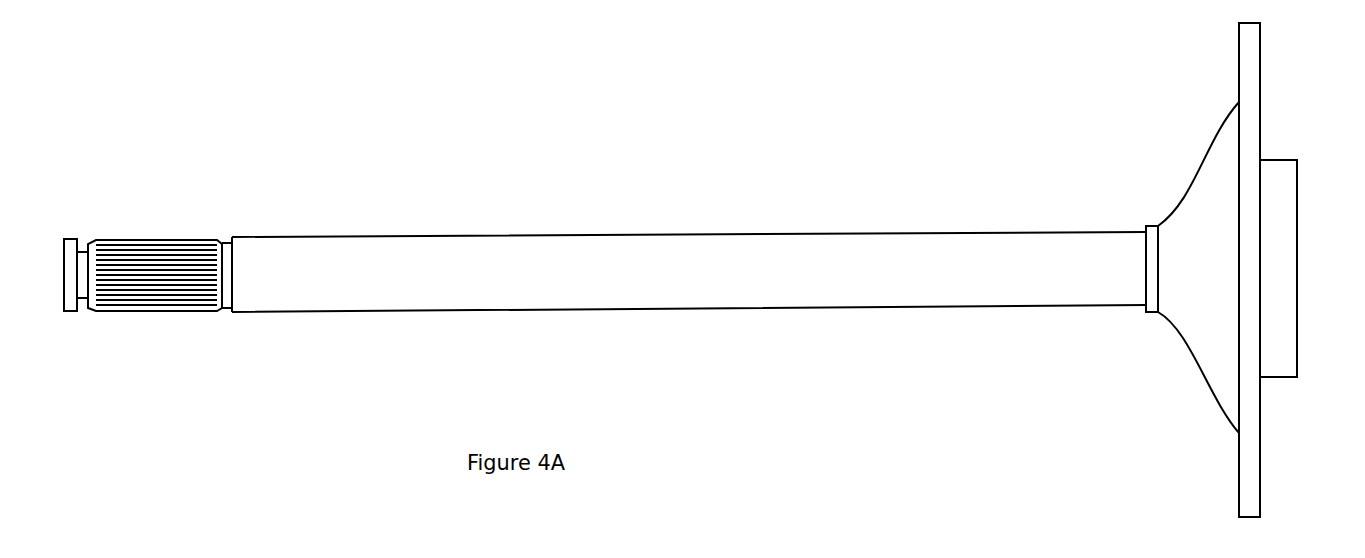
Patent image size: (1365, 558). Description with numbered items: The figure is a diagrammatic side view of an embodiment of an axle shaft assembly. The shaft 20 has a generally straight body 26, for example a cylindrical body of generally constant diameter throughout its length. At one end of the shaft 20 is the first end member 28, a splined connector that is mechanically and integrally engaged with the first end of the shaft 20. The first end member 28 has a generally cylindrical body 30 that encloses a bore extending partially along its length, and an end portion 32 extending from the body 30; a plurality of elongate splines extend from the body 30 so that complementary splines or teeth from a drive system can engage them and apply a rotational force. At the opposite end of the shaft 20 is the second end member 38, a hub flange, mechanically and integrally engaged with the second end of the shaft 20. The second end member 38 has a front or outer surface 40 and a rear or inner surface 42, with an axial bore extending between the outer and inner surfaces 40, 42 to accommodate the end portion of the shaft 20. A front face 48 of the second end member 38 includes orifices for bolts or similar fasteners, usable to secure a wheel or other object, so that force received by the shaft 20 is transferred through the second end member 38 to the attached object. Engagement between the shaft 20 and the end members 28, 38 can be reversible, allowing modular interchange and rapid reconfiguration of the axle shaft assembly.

The shaft 20 is at (703, 270).
The body 26 is at (507, 263).
The first end member 28 is at (148, 259).
The body 30 is at (140, 312).
The end portion 32 is at (72, 239).
The second end member 38 is at (1219, 270).
The outer surface 40 is at (1298, 372).
The inner surface 42 is at (1145, 228).
The front face 48 is at (1260, 473).